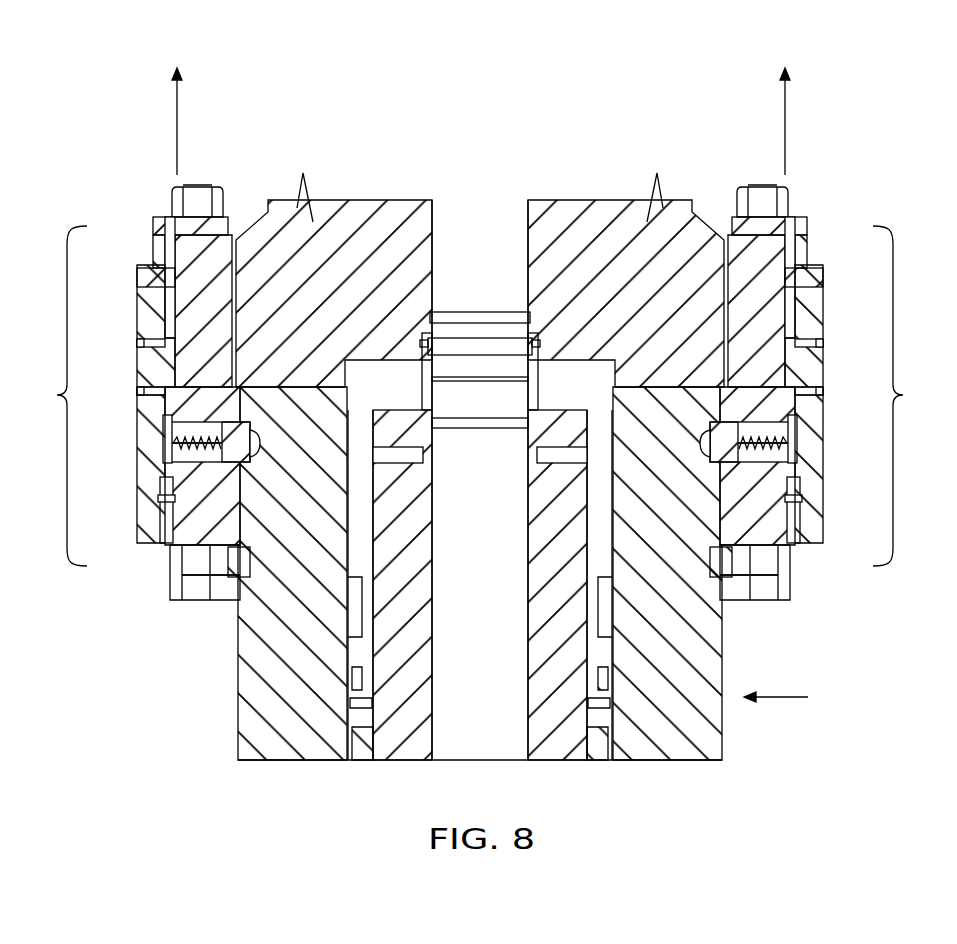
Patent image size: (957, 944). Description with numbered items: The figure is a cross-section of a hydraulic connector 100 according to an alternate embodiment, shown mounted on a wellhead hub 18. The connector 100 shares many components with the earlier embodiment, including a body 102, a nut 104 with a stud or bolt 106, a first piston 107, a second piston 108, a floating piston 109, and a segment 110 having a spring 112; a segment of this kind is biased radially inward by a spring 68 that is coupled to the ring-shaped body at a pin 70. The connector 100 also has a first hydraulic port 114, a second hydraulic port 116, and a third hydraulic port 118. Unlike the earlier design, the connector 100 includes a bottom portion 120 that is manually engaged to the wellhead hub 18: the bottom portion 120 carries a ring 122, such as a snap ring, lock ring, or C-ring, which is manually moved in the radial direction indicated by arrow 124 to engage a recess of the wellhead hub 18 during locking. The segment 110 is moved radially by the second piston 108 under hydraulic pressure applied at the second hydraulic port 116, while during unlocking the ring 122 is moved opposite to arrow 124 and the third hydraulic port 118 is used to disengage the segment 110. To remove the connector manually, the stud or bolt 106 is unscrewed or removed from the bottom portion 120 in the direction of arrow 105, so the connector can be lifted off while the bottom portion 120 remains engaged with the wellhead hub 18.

The wellhead hub 18 is at (686, 772).
The spring 68 is at (250, 468).
The pin 70 is at (248, 578).
The connector 100 is at (835, 149).
The body 102 is at (58, 395).
The nut 104 is at (195, 187).
The arrow 105 is at (177, 120).
The stud or bolt 106 is at (228, 226).
The first piston 107 is at (153, 235).
The second piston 108 is at (137, 290).
The floating piston 109 is at (150, 268).
The segment 110 is at (236, 425).
The spring 112 is at (207, 450).
The first hydraulic port 114 is at (168, 228).
The second hydraulic port 116 is at (137, 346).
The third hydraulic port 118 is at (135, 397).
The bottom portion 120 is at (193, 598).
The ring 122 is at (243, 553).
The arrow 124 is at (808, 697).